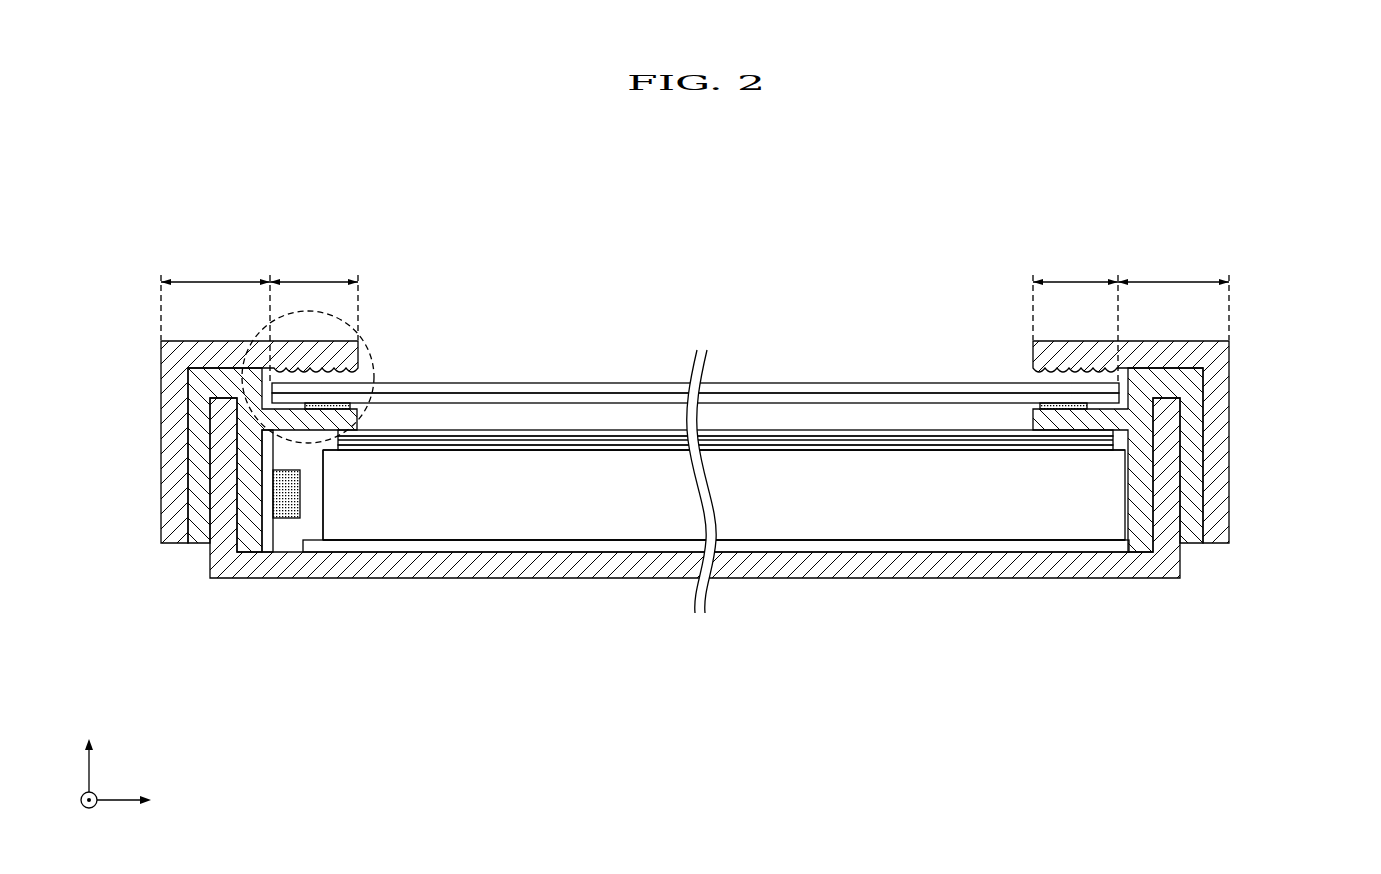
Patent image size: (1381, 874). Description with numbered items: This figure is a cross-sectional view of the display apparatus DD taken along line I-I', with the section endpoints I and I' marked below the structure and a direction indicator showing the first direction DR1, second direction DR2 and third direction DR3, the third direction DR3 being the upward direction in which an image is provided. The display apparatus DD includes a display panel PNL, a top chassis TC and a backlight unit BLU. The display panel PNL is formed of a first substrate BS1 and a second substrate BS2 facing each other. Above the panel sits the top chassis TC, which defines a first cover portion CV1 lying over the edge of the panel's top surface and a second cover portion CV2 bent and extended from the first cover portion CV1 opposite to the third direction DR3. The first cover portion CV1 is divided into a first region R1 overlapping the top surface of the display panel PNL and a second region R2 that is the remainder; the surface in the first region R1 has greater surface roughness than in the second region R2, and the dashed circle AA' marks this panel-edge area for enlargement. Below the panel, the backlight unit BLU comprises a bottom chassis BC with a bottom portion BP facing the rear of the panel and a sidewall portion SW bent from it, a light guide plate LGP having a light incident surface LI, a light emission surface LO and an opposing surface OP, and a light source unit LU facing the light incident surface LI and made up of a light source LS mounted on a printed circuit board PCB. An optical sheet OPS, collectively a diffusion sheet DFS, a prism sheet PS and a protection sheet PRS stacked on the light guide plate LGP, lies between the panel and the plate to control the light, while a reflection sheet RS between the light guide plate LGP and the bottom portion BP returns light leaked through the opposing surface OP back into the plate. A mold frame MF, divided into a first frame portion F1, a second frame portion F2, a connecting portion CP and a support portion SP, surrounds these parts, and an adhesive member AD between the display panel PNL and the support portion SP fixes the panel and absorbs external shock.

The display apparatus DD is at (970, 218).
The top chassis TC is at (759, 425).
The first cover portion CV1 is at (1170, 350).
The second cover portion CV2 is at (737, 455).
The first region R1 is at (694, 319).
The second region R2 is at (695, 298).
The enlarged region AA' is at (338, 375).
The display panel PNL is at (695, 337).
The first substrate BS1 is at (520, 310).
The second substrate BS2 is at (537, 388).
The adhesive member AD is at (1045, 406).
The backlight unit BLU is at (655, 523).
The mold frame MF is at (644, 502).
The connecting portion CP is at (222, 380).
The first frame portion F1 is at (202, 425).
The second frame portion F2 is at (250, 477).
The support portion SP is at (313, 415).
The light source unit LU is at (298, 561).
The printed circuit board PCB is at (267, 535).
The light source LS is at (300, 505).
The light guide plate LGP is at (724, 571).
The light incident surface LI is at (323, 487).
The light emission surface LO is at (600, 450).
The opposing surface OP is at (655, 540).
The reflection sheet RS is at (533, 548).
The optical sheet OPS is at (725, 561).
The protection sheet PRS is at (790, 433).
The prism sheet PS is at (835, 441).
The diffusion sheet DFS is at (880, 447).
The bottom chassis BC is at (717, 545).
The bottom portion BP is at (1090, 567).
The sidewall portion SW is at (1165, 486).
The section line I-I' start I is at (211, 598).
The section line I-I' end I' is at (1178, 598).
The first direction DR1 is at (90, 814).
The second direction DR2 is at (144, 801).
The third direction DR3 is at (90, 754).